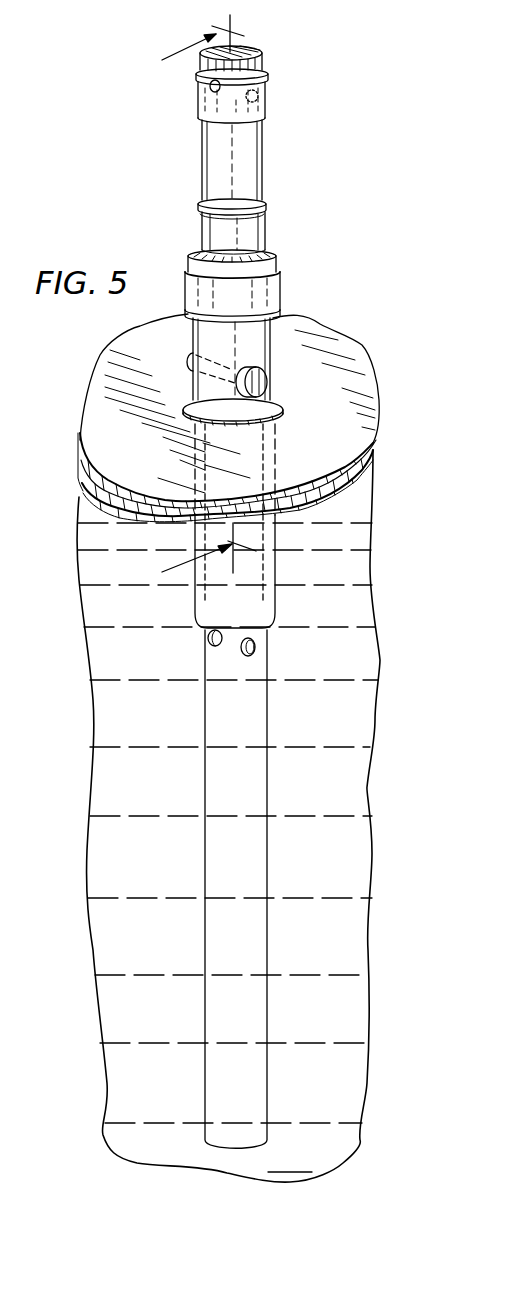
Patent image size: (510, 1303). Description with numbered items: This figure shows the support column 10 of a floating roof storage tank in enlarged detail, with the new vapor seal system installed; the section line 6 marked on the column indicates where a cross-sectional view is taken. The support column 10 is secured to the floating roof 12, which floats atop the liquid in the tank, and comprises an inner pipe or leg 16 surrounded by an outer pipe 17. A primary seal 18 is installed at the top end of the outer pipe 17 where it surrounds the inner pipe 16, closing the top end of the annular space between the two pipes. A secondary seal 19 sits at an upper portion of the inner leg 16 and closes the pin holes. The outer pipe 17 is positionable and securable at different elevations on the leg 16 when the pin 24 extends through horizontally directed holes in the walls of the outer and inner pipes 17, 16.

The section line of FIG. 6 is at (197, 302).
The support column assembly 10 is at (335, 60).
The floating roof 12 is at (337, 335).
The inner pipe 16 is at (263, 146).
The outer pipe 17 is at (277, 343).
The primary seal 18 is at (270, 232).
The secondary seal 19 is at (265, 96).
The pin 24 is at (270, 377).